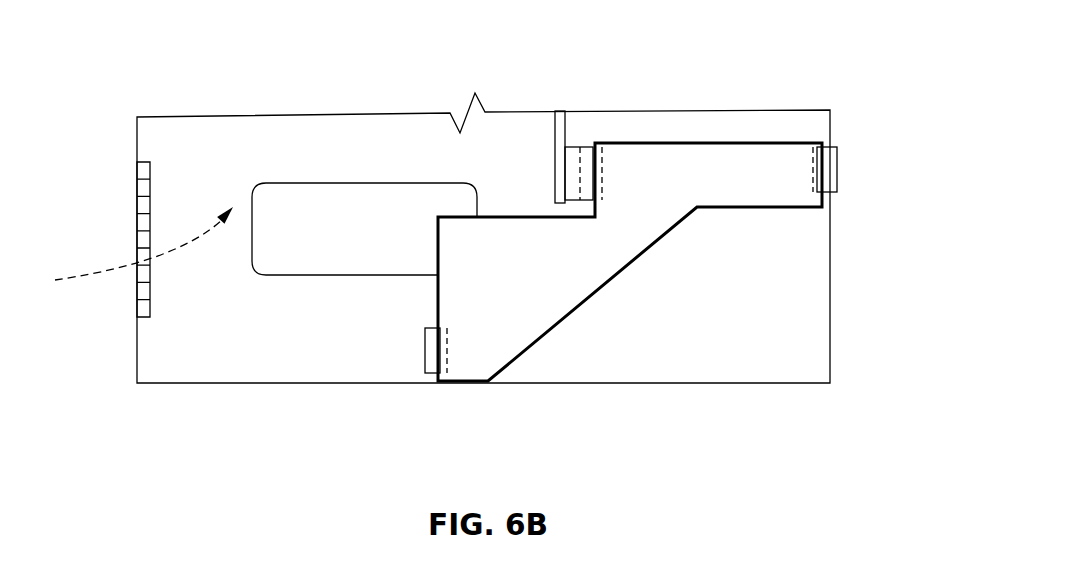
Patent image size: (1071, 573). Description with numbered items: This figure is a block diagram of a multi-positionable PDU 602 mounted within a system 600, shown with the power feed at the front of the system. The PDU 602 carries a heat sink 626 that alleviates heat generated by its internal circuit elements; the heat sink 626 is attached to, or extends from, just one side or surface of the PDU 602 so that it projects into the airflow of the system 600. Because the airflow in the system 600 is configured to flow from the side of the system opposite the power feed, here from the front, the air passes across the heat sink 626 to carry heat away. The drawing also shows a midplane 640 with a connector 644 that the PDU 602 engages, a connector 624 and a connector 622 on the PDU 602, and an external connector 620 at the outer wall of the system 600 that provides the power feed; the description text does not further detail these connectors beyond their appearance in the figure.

The system 600 is at (434, 226).
The PDU 602 is at (630, 262).
The external connector 620 is at (838, 148).
The connector 622 is at (425, 345).
The connector 624 is at (603, 185).
The heat sink 626 is at (364, 229).
The midplane 640 is at (558, 110).
The connector 644 is at (572, 146).